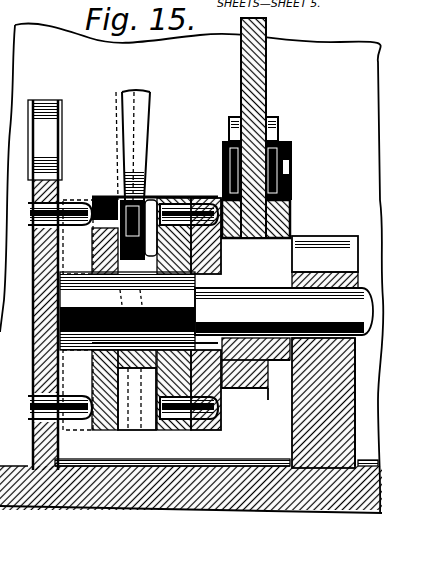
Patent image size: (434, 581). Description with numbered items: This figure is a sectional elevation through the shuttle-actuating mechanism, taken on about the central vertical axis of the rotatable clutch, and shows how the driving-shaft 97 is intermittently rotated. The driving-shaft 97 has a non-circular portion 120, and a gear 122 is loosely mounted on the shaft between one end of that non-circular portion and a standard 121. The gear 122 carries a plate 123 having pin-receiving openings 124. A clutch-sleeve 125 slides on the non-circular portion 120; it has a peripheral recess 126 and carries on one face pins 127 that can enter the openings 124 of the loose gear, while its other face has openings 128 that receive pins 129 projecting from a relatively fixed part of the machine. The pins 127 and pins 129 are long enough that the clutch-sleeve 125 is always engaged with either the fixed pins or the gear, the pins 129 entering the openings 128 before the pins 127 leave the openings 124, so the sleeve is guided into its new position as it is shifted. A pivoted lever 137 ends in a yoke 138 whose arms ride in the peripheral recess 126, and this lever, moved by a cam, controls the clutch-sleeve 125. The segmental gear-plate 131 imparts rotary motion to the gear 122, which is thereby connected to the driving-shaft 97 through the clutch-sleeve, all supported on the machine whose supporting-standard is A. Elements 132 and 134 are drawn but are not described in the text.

The driving-shaft 97 is at (284, 311).
The non-circular portion 120 is at (127, 311).
The standard 121 is at (191, 306).
The gear 122 is at (275, 246).
The plate 123 is at (215, 432).
The pin-receiving openings 124 is at (212, 200).
The clutch-sleeve 125 is at (165, 388).
The peripheral recess 126 is at (130, 420).
The pins 127 is at (196, 206).
The openings 128 is at (90, 198).
The pins 129 is at (22, 532).
The segmental gear-plate 131 is at (256, 86).
The block 132 is at (270, 213).
The nut 134 is at (280, 150).
The lever 137 is at (138, 110).
The yoke 138 is at (125, 236).
The supporting-standard A is at (332, 510).